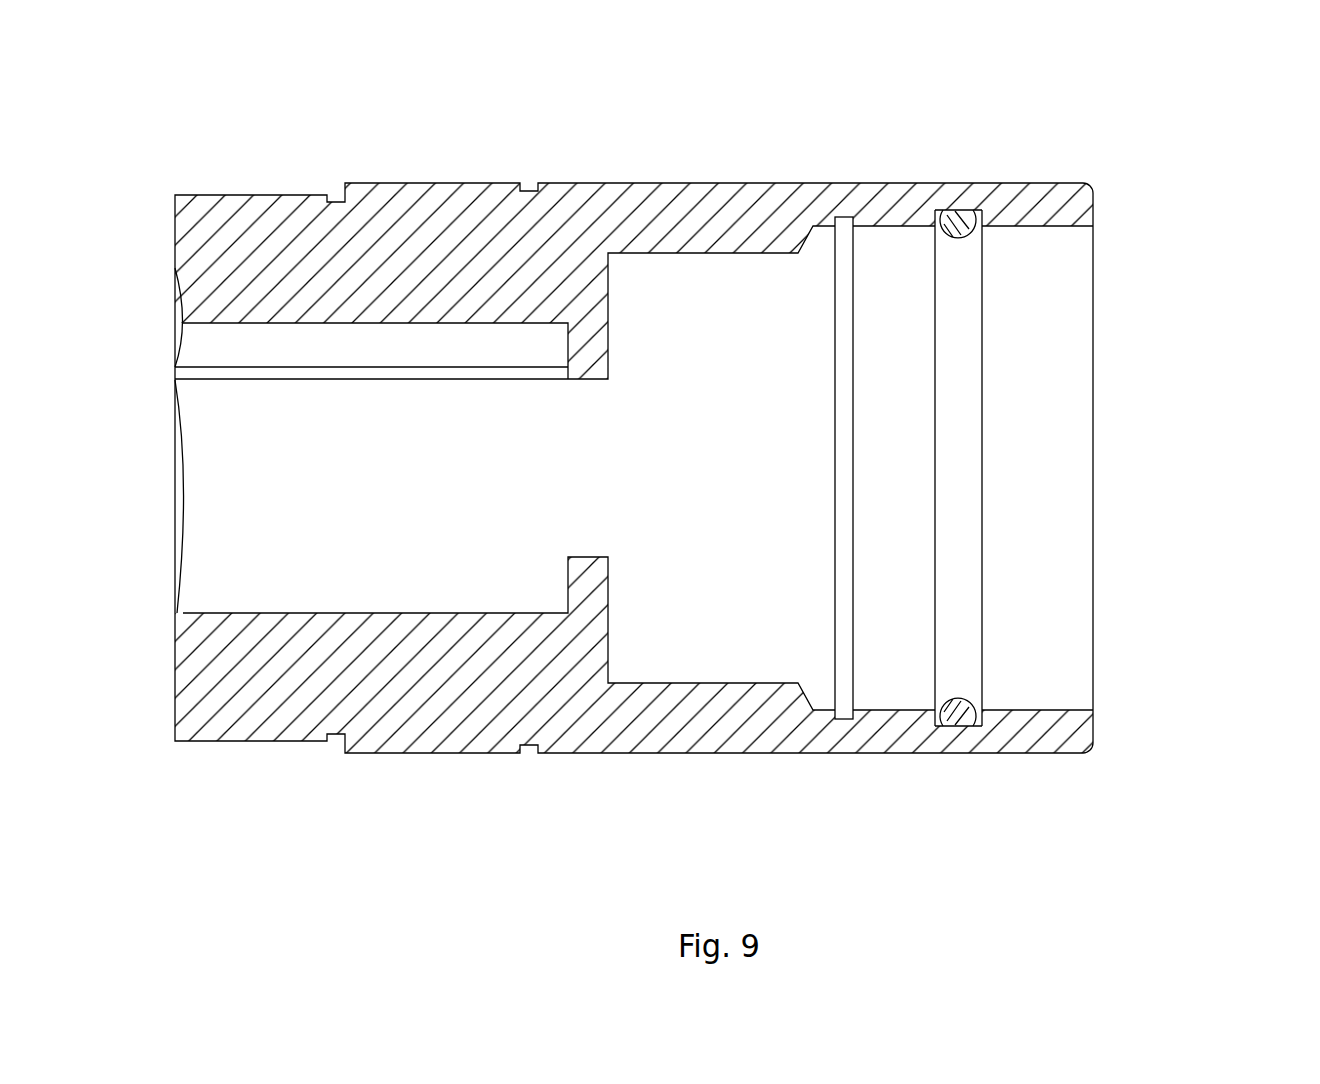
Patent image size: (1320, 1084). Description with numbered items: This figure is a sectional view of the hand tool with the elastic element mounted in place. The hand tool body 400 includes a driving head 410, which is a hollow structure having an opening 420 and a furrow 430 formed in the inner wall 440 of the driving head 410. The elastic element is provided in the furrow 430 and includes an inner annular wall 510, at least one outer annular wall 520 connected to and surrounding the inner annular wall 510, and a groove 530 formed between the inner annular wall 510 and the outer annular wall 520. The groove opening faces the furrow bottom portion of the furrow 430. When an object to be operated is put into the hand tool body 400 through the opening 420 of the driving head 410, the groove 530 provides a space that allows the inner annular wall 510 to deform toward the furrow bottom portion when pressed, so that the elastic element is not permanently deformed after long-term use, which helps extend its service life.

The hand tool body 400 is at (240, 156).
The driving head 410 is at (750, 754).
The opening 420 is at (1040, 579).
The furrow 430 is at (962, 700).
The inner wall 440 is at (1063, 460).
The inner annular wall 510 is at (962, 322).
The outer annular wall 520 is at (945, 235).
The groove 530 is at (955, 185).